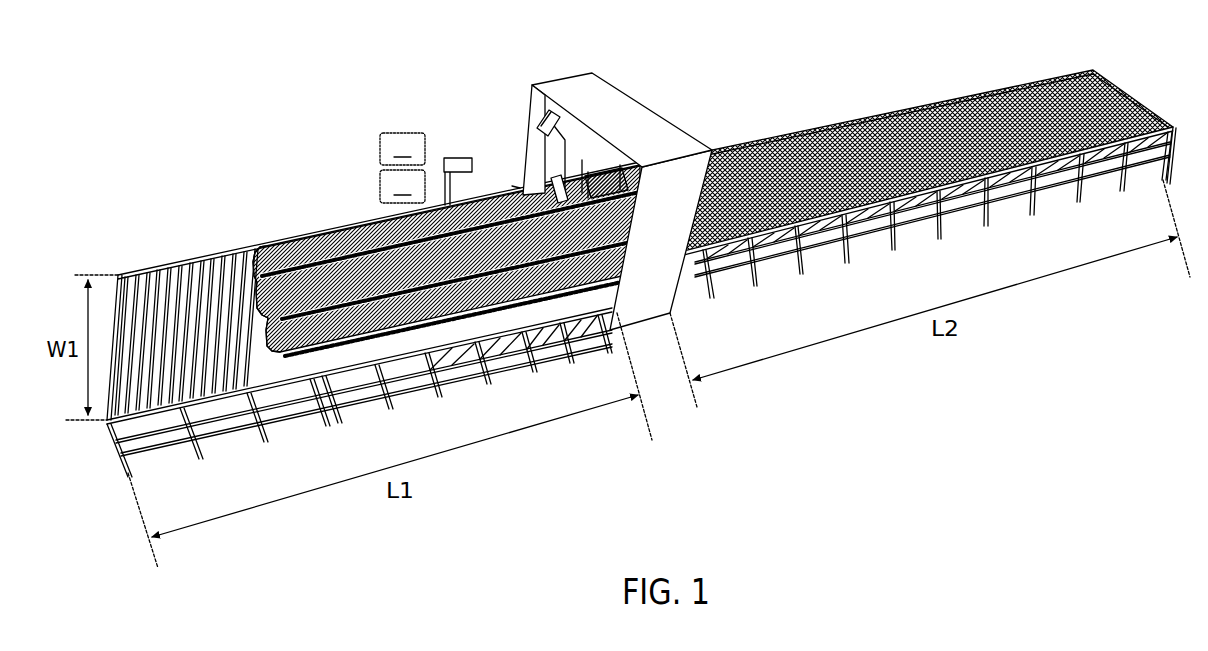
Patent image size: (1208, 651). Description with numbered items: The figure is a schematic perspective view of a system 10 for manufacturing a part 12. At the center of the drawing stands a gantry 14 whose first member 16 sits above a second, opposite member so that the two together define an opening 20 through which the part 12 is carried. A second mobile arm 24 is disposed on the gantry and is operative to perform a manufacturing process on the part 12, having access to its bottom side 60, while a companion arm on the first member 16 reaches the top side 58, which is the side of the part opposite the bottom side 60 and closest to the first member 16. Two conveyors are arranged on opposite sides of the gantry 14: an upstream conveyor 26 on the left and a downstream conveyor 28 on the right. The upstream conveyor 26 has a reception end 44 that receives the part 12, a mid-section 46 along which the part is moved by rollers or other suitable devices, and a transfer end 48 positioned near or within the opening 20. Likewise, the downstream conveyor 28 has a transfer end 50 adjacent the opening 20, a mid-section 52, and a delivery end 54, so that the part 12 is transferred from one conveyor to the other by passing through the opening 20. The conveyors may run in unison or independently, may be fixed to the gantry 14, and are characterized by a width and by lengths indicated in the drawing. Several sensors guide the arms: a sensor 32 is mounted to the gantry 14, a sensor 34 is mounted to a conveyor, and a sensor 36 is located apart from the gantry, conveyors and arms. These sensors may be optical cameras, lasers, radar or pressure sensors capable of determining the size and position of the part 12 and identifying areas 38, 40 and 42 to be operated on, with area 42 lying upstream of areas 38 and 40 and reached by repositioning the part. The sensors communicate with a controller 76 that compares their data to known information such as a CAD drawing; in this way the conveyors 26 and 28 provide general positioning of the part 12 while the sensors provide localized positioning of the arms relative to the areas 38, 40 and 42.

The system 10 is at (630, 244).
The part 12 is at (290, 405).
The gantry 14 is at (585, 170).
The first member 16 is at (628, 106).
The opening 20 is at (528, 148).
The second mobile arm 24 is at (582, 160).
The upstream conveyor 26 is at (192, 260).
The downstream conveyor 28 is at (713, 150).
The sensor 32 is at (558, 93).
The sensor 34 is at (447, 153).
The sensor 36 is at (402, 186).
The area 38 is at (523, 187).
The area 40 is at (551, 338).
The area 42 is at (360, 235).
The reception end 44 is at (362, 319).
The mid-section 46 is at (437, 258).
The transfer end 48 is at (511, 185).
The transfer end 50 is at (587, 328).
The mid-section 52 is at (751, 292).
The delivery end 54 is at (918, 174).
The top side 58 is at (333, 258).
The bottom side 60 is at (397, 350).
The controller 76 is at (402, 149).